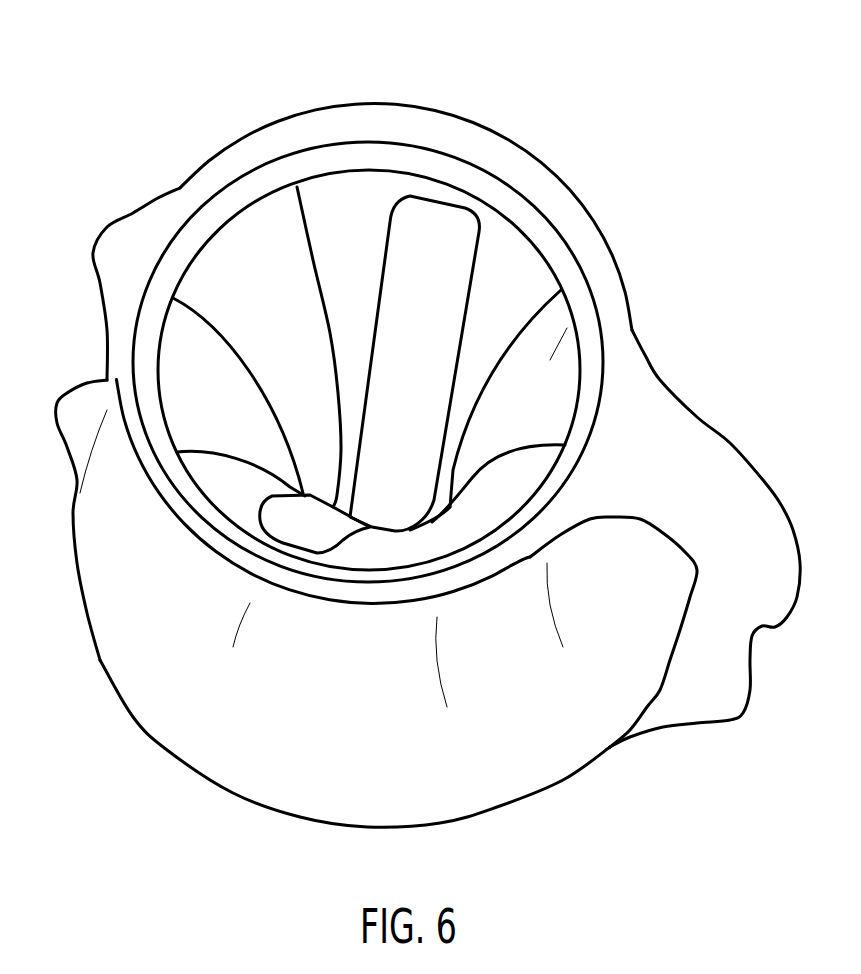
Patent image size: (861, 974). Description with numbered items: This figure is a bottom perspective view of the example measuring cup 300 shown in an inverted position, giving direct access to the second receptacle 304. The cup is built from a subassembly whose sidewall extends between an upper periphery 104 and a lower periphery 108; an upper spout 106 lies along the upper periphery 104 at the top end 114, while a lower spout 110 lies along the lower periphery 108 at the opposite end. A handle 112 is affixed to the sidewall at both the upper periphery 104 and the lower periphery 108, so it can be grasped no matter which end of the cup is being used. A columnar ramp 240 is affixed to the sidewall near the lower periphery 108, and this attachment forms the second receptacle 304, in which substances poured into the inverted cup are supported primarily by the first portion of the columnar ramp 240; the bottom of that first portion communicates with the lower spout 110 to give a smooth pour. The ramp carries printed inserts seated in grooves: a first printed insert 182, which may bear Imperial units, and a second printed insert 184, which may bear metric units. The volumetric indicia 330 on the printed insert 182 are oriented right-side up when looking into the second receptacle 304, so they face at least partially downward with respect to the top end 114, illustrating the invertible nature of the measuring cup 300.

The measuring cup 300 is at (145, 78).
The upper periphery 104 is at (435, 828).
The upper spout 106 is at (80, 388).
The lower periphery 108 is at (253, 128).
The lower spout 110 is at (127, 213).
The handle 112 is at (780, 500).
The top end 114 is at (512, 823).
The first printed insert 182 is at (440, 203).
The second printed insert 184 is at (268, 513).
The columnar ramp 240 is at (550, 360).
The second receptacle 304 is at (503, 270).
The volumetric indicia 330 is at (400, 263).